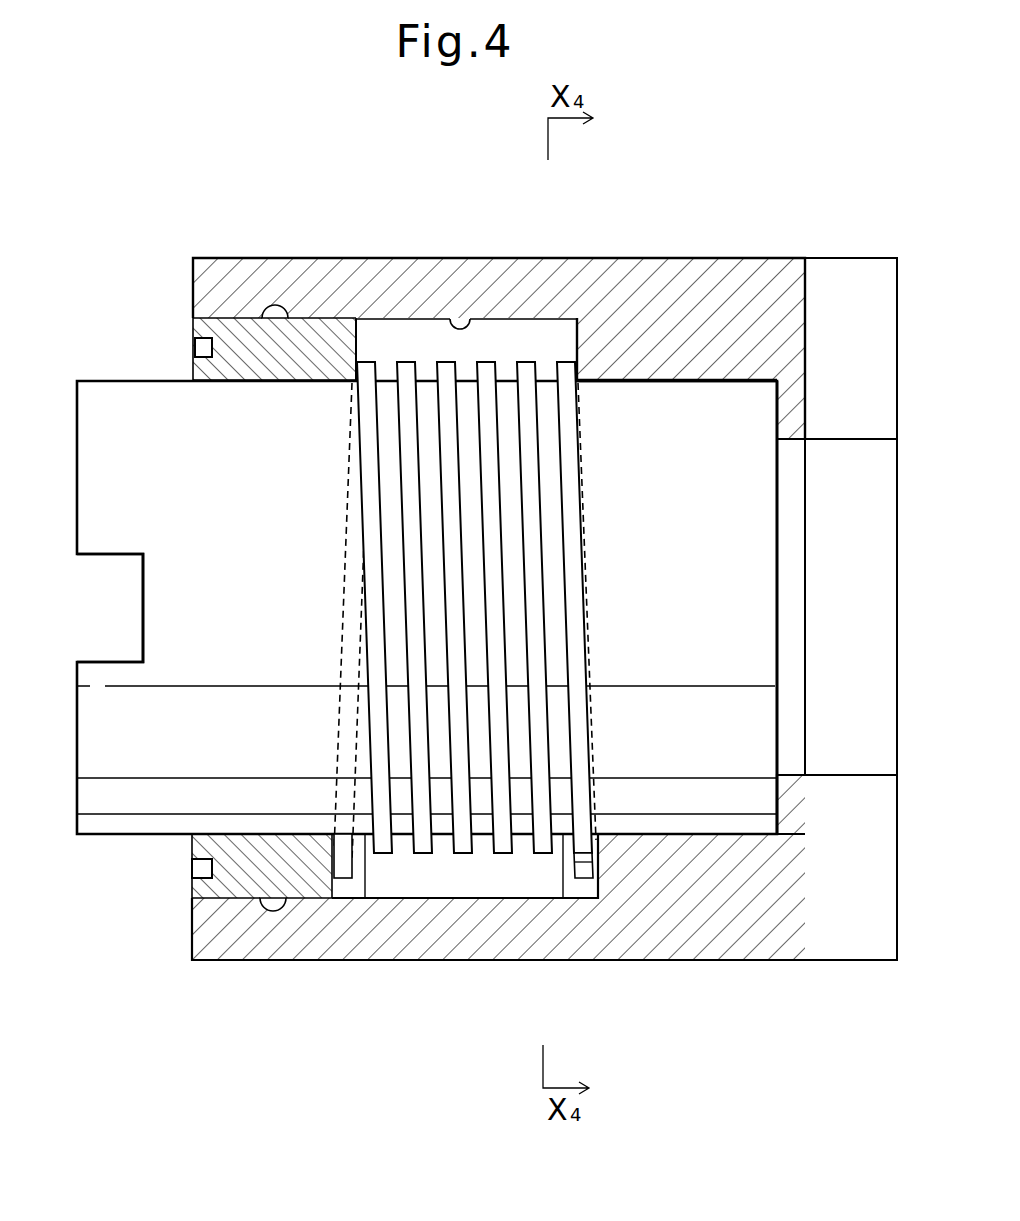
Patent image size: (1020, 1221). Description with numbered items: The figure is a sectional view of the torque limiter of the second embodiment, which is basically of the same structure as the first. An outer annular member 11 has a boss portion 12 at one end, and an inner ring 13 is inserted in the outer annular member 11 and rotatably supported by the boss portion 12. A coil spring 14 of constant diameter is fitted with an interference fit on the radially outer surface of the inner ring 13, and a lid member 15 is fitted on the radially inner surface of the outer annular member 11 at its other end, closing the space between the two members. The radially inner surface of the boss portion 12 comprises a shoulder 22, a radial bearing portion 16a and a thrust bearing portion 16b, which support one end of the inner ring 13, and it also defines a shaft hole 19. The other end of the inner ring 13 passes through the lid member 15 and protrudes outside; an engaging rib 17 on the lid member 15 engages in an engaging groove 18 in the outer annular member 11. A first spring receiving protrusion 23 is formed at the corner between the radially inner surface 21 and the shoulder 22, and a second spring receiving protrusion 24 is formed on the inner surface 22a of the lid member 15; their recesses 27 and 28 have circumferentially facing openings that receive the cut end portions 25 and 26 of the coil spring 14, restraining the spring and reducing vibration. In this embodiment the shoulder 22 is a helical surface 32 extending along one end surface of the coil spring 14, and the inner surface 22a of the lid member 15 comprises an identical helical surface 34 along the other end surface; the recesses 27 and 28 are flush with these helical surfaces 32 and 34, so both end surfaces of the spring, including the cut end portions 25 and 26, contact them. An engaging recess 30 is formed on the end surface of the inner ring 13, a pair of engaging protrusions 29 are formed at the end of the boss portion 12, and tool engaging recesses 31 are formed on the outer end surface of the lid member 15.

The outer annular member 11 is at (515, 275).
The boss portion 12 is at (747, 303).
The inner ring 13 is at (408, 508).
The coil spring 14 is at (518, 517).
The lid member 15 is at (232, 332).
The radial bearing portion 16a is at (666, 380).
The thrust bearing portion 16b is at (775, 405).
The engaging rib 17 is at (270, 903).
The engaging groove 18 is at (282, 902).
The shaft hole 19 is at (790, 440).
The radially inner surface 21 is at (452, 318).
The shoulder 22 is at (577, 340).
The inner surface 22a is at (357, 343).
The first spring receiving protrusion 23 is at (572, 885).
The second spring receiving protrusion 24 is at (360, 883).
The cut end portion 25 is at (585, 805).
The cut end portion 26 is at (311, 621).
The recess 27 is at (588, 900).
The recess 28 is at (343, 883).
The engaging protrusions 29 is at (841, 285).
The engaging recess 30 is at (122, 662).
The tool engaging recesses 31 is at (195, 868).
The helical surface 32 is at (592, 615).
The helical surface 34 is at (352, 612).